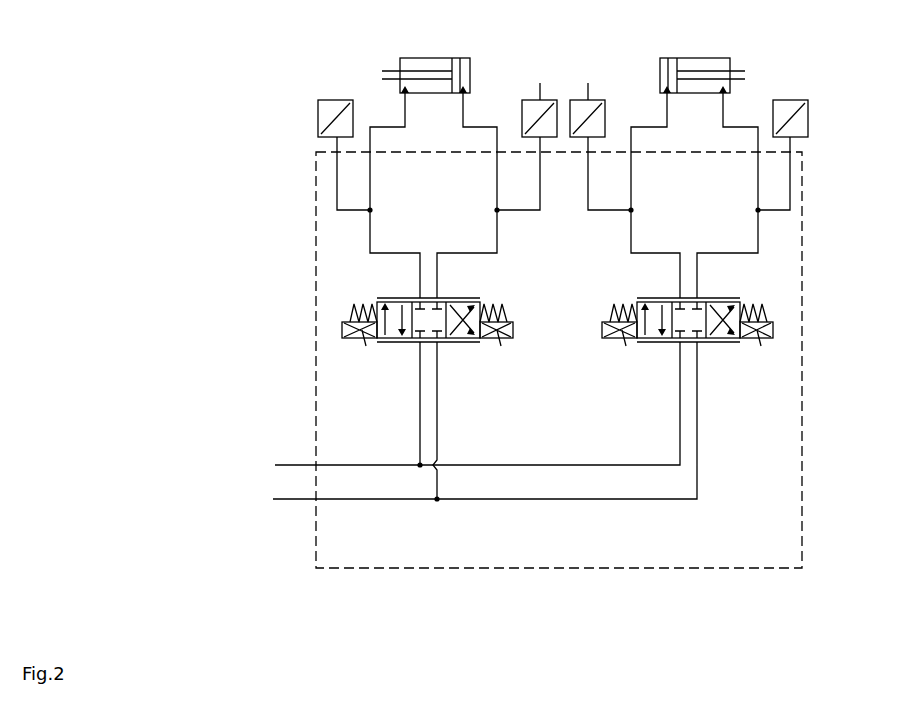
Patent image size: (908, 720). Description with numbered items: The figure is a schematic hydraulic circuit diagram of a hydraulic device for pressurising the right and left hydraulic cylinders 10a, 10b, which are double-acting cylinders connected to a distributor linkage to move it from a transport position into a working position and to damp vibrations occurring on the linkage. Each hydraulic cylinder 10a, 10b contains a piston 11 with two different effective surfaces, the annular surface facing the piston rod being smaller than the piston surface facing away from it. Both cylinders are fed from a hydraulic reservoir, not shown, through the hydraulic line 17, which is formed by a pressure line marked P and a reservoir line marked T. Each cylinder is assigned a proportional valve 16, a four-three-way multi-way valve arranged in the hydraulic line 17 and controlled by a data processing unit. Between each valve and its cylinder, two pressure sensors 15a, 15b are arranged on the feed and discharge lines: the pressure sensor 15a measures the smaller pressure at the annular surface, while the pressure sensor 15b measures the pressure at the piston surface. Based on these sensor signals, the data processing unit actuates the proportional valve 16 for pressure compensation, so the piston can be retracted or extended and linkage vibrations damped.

The right hydraulic cylinder 10a is at (438, 58).
The left hydraulic cylinder 10b is at (700, 58).
The piston 11 is at (409, 76).
The pressure sensor 15a is at (331, 100).
The pressure sensor 15b is at (567, 96).
The proportional valve 16 is at (348, 328).
The hydraulic line 17 is at (699, 428).